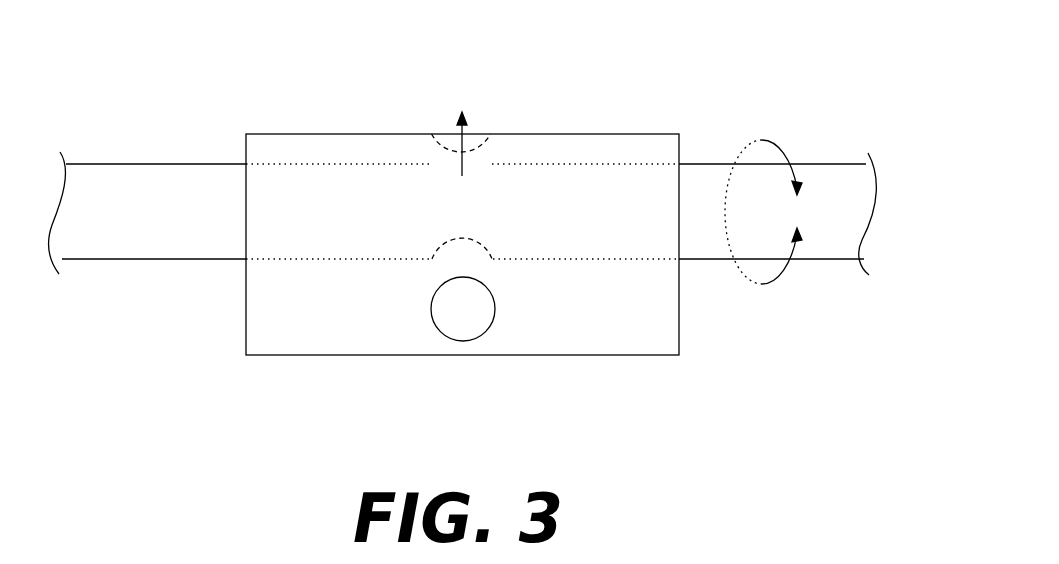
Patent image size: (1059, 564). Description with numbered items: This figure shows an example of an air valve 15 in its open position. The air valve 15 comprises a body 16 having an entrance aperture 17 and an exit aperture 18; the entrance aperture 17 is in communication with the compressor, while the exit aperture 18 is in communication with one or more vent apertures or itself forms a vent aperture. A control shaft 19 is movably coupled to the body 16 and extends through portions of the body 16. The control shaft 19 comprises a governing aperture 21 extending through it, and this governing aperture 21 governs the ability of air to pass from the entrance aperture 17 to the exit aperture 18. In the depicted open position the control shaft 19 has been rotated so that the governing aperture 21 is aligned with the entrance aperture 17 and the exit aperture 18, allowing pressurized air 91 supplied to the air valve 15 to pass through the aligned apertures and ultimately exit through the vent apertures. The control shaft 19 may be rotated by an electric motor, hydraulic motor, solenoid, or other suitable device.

The air valve 15 is at (702, 82).
The body 16 is at (328, 300).
The entrance aperture 17 is at (486, 331).
The exit aperture 18 is at (490, 152).
The control shaft 19 is at (153, 193).
The governing aperture 21 is at (445, 177).
The pressurized air 91 is at (453, 165).